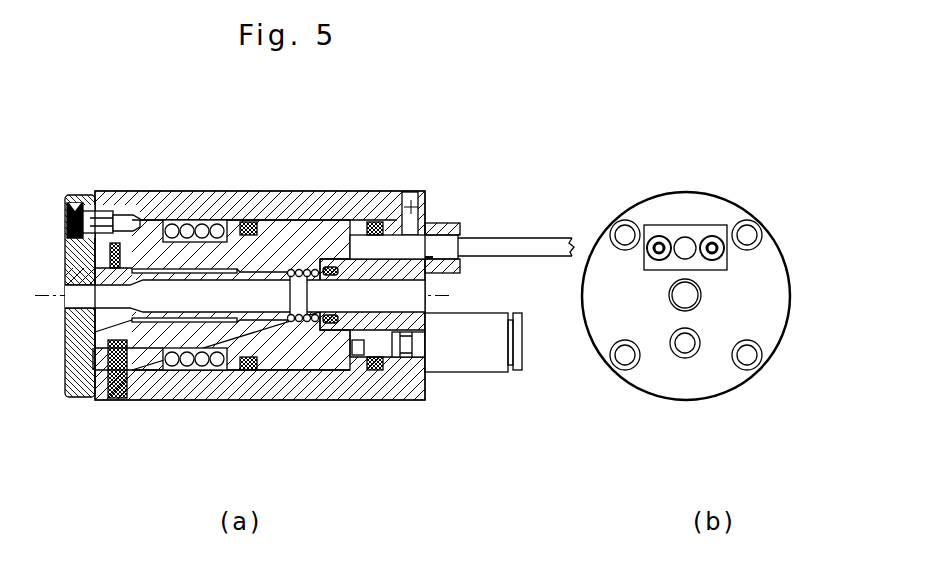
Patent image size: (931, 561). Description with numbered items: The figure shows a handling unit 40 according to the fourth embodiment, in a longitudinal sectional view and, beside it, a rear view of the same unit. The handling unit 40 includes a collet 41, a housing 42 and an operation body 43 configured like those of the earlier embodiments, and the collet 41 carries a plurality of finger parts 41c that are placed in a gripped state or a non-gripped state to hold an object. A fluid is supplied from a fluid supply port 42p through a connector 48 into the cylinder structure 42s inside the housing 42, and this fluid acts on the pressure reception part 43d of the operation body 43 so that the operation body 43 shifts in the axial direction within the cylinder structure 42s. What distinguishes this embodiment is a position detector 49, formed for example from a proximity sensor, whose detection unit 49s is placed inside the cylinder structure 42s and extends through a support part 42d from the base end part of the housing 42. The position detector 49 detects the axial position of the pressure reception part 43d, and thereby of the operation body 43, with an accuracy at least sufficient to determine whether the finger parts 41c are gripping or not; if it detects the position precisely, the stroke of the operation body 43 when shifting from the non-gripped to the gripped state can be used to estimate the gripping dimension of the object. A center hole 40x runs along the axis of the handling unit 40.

The handling unit 40 is at (462, 93).
The center through hole 40x is at (288, 296).
The collet 41 is at (148, 268).
The finger parts 41c is at (63, 278).
The housing 42 is at (248, 400).
The support part 42d is at (310, 325).
The cylinder structure 42s is at (352, 348).
The fluid supply port 42p is at (409, 353).
The operation body 43 is at (288, 220).
The pressure reception part 43d is at (374, 371).
The connector 48 is at (680, 330).
The position detector 49 is at (446, 228).
The detection unit 49s is at (342, 237).